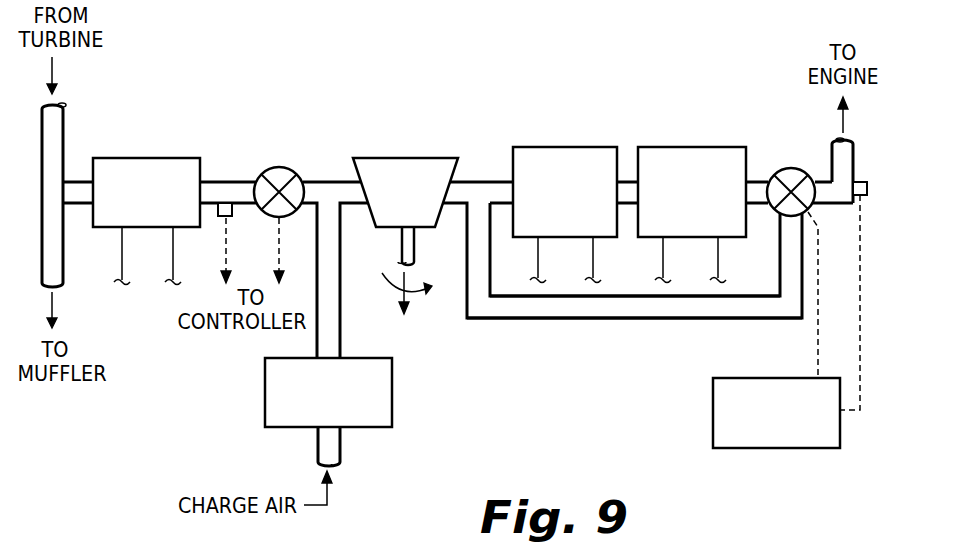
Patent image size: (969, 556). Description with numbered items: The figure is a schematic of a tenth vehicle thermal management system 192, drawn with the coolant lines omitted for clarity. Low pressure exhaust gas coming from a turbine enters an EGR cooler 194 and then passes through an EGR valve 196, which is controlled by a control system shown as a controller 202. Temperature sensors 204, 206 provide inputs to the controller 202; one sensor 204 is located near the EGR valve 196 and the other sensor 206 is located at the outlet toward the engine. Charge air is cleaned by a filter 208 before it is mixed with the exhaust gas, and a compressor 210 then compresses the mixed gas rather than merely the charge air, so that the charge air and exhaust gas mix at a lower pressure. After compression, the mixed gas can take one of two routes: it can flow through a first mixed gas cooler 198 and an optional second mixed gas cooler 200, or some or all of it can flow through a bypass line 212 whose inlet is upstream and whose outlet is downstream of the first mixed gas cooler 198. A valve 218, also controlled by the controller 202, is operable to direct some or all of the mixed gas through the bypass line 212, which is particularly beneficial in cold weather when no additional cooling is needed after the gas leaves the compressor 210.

The vehicle thermal management system 192 is at (562, 44).
The EGR cooler 194 is at (143, 158).
The EGR valve 196 is at (279, 168).
The first mixed gas cooler 198 is at (577, 147).
The second mixed gas cooler 200 is at (700, 147).
The controller 202 is at (801, 448).
The temperature sensor 204 is at (246, 205).
The temperature sensor 206 is at (870, 190).
The filter 208 is at (265, 397).
The compressor 210 is at (405, 158).
The bypass line 212 is at (612, 320).
The valve 218 is at (791, 168).